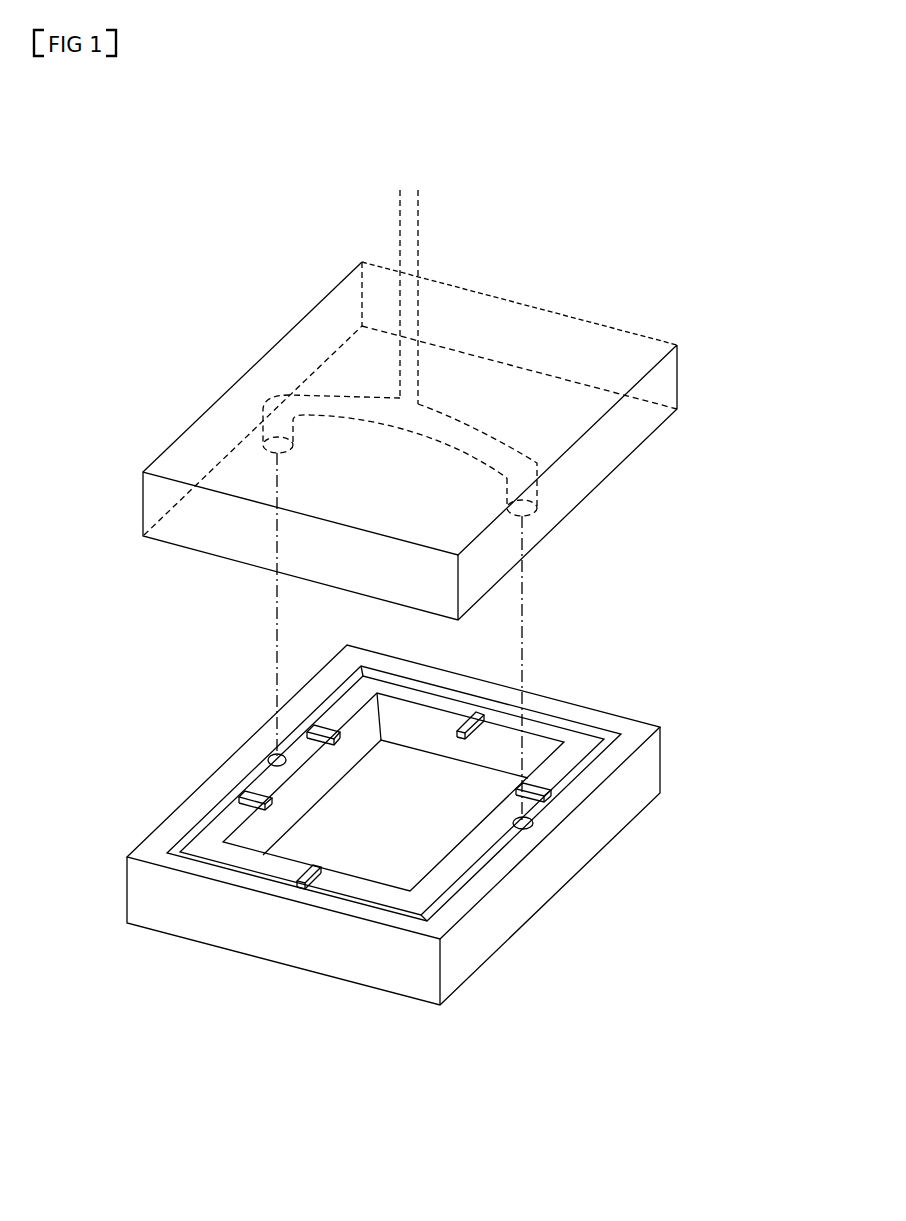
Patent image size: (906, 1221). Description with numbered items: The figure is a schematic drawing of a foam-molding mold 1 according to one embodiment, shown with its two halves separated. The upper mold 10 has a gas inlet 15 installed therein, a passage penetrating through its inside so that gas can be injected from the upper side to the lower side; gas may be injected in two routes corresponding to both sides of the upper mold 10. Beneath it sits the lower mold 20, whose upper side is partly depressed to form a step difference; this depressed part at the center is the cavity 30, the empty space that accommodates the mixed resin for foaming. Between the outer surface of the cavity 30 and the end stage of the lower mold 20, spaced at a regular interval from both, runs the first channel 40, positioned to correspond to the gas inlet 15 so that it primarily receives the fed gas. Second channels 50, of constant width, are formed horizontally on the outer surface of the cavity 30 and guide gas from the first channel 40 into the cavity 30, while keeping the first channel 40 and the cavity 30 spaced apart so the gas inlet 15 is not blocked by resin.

The foam-molding mold 1 is at (206, 208).
The upper mold 10 is at (620, 428).
The gas inlet 15 is at (404, 246).
The lower mold 20 is at (652, 770).
The cavity 30 is at (333, 817).
The first channel 40 is at (453, 895).
The second channel 50 is at (316, 872).